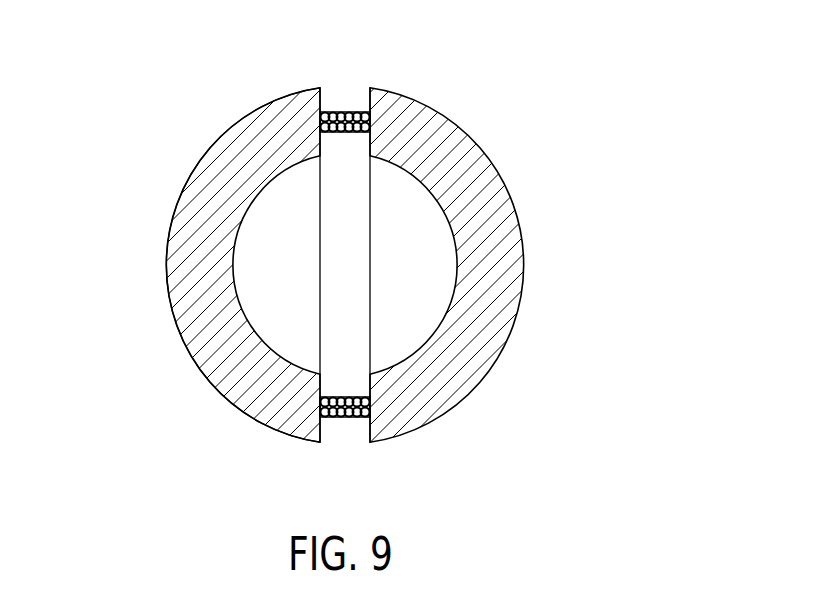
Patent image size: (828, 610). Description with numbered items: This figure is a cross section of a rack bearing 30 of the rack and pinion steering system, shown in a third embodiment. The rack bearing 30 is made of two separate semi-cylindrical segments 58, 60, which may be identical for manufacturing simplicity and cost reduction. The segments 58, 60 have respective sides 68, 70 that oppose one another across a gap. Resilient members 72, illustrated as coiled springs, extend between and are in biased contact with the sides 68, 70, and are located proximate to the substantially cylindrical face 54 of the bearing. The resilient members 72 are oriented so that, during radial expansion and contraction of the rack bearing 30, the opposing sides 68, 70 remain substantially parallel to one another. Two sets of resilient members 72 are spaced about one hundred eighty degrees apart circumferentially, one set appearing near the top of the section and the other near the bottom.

The rack bearing 30 is at (346, 261).
The substantially cylindrical face 54 is at (207, 383).
The semi-cylindrical segment 58 is at (300, 264).
The semi-cylindrical segment 60 is at (390, 265).
The side 68 is at (320, 221).
The side 70 is at (370, 304).
The resilient member 72 is at (348, 99).